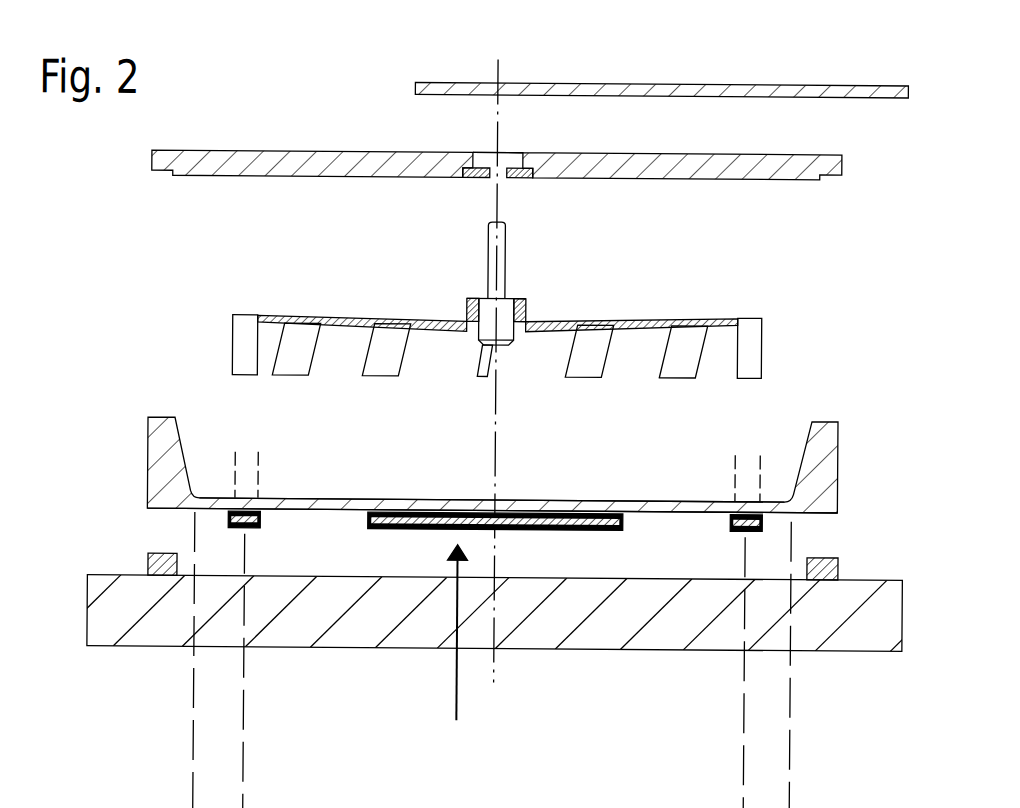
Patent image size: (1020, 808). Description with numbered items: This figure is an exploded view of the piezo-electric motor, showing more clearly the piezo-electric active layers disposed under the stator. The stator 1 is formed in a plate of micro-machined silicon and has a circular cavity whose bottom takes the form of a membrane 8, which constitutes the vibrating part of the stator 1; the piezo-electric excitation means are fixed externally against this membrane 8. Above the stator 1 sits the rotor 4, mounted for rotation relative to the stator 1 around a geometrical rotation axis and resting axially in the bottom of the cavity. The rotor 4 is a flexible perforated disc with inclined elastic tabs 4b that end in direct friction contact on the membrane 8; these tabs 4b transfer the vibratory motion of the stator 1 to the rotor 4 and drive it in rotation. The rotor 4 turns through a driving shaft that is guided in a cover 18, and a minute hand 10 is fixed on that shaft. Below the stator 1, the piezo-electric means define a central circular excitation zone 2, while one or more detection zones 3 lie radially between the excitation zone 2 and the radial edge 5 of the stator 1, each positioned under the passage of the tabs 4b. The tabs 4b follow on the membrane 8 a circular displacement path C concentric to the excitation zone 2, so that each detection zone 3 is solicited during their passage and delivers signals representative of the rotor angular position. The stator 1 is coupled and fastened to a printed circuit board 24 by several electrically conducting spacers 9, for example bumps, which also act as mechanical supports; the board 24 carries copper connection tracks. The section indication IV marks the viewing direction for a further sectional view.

The stator 1 is at (836, 472).
The excitation zone 2 is at (559, 537).
The detection zone 3 is at (244, 532).
The rotor 4 is at (657, 313).
The tabs 4b is at (760, 345).
The radial edge 5 is at (842, 504).
The membrane 8 is at (328, 500).
The spacers 9 is at (161, 575).
The minute hand 10 is at (869, 88).
The cover 18 is at (829, 171).
The printed circuit board 24 is at (869, 646).
The circular displacement path C is at (752, 468).
The section line IV is at (482, 726).